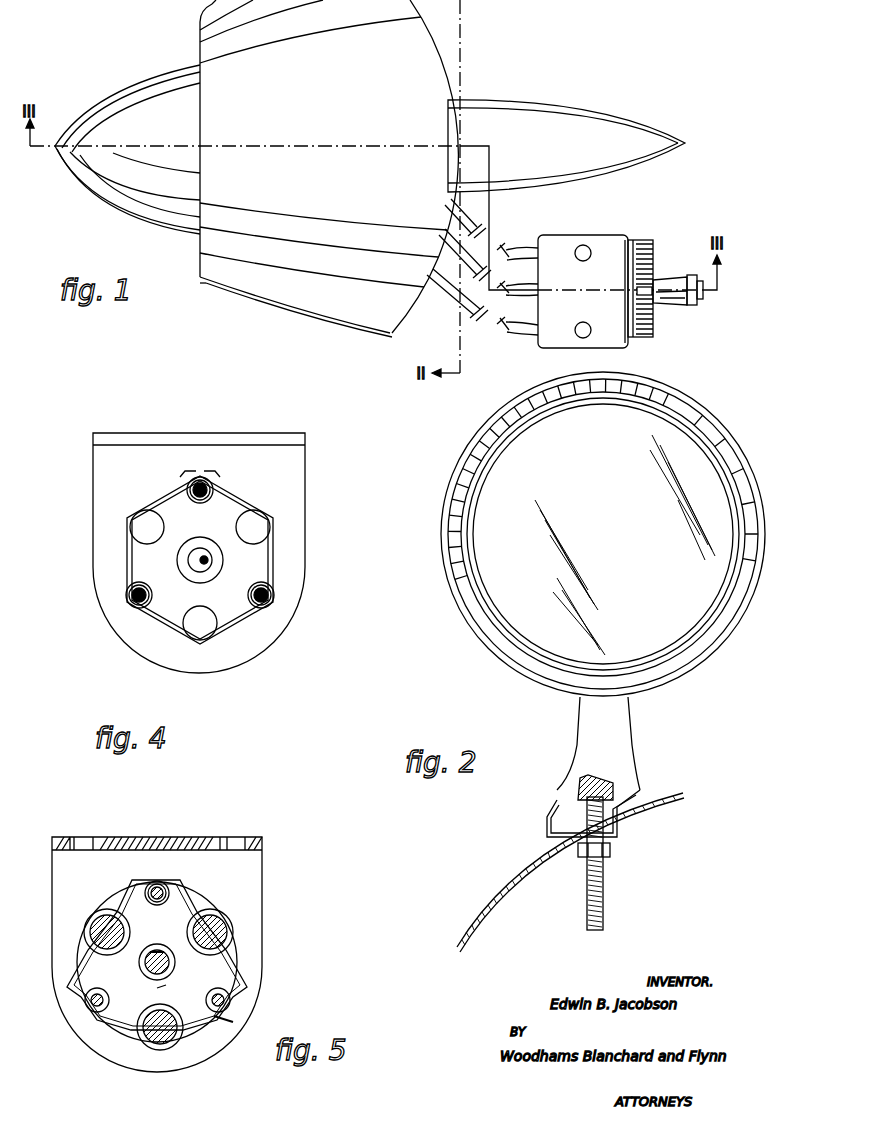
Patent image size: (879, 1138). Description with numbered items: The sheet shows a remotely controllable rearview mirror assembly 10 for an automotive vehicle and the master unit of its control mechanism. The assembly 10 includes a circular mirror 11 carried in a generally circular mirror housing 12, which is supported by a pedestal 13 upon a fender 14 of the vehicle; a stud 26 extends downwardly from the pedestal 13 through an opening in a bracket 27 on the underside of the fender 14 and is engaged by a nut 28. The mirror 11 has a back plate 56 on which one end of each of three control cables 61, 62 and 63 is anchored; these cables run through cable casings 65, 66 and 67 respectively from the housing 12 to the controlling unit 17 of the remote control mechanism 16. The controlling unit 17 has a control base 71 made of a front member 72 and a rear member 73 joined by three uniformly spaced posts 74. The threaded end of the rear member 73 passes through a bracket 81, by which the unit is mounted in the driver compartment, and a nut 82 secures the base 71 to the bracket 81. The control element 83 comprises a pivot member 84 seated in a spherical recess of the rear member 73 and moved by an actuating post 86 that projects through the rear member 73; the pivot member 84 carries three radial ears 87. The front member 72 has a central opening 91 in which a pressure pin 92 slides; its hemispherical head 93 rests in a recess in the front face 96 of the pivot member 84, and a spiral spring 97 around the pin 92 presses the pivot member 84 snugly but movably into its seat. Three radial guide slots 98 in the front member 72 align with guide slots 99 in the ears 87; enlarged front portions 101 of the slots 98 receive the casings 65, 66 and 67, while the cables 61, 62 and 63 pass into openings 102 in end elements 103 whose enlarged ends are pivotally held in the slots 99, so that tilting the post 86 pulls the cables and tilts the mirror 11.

In FIG. 1, the rearview mirror assembly 10 is at (530, 67).
In FIG. 2, the rearview mirror assembly 10 is at (576, 536).
In FIG. 2, the mirror 11 is at (688, 623).
In FIG. 2, the mirror housing 12 is at (452, 481).
In FIG. 1, the pedestal 13 is at (560, 100).
In FIG. 2, the pedestal 13 is at (625, 757).
In FIG. 2, the fender 14 is at (495, 886).
In FIG. 1, the remote control mechanism 16 is at (507, 305).
In FIG. 1, the controlling unit 17 is at (642, 268).
In FIG. 4, the controlling unit 17 is at (205, 538).
In FIG. 2, the stud 26 is at (604, 877).
In FIG. 2, the bracket 27 is at (572, 843).
In FIG. 2, the nut 28 is at (611, 850).
In FIG. 2, the back plate 56 is at (451, 572).
In FIG. 1, the control cable 61 is at (498, 331).
In FIG. 4, the control cable 61 is at (267, 603).
In FIG. 5, the control cable 61 is at (231, 1003).
In FIG. 1, the control cable 62 is at (504, 247).
In FIG. 4, the control cable 62 is at (138, 605).
In FIG. 5, the control cable 62 is at (88, 1002).
In FIG. 1, the control cable 63 is at (504, 290).
In FIG. 4, the control cable 63 is at (213, 485).
In FIG. 5, the control cable 63 is at (167, 895).
In FIG. 1, the cable casing 65 is at (442, 289).
In FIG. 4, the cable casing 65 is at (274, 592).
In FIG. 1, the cable casing 66 is at (446, 221).
In FIG. 4, the cable casing 66 is at (136, 590).
In FIG. 1, the cable casing 67 is at (436, 247).
In FIG. 4, the cable casing 67 is at (199, 478).
In FIG. 4, the control base 71 is at (270, 497).
In FIG. 5, the control base 71 is at (227, 905).
In FIG. 4, the front member 72 is at (283, 541).
In FIG. 5, the rear member 73 is at (236, 944).
In FIG. 5, the posts 74 is at (89, 924).
In FIG. 1, the bracket 81 is at (595, 243).
In FIG. 4, the bracket 81 is at (273, 441).
In FIG. 5, the bracket 81 is at (193, 837).
In FIG. 1, the nut 82 is at (643, 247).
In FIG. 1, the control element 83 is at (675, 313).
In FIG. 5, the pivot member 84 is at (223, 962).
In FIG. 1, the actuating post 86 is at (703, 298).
In FIG. 5, the ears 87 is at (214, 1021).
In FIG. 4, the central opening 91 is at (207, 560).
In FIG. 4, the pressure pin 92 is at (206, 567).
In FIG. 5, the pressure pin 92 is at (147, 952).
In FIG. 5, the head 93 is at (177, 977).
In FIG. 5, the front face 96 is at (122, 1002).
In FIG. 5, the spiral spring 97 is at (173, 962).
In FIG. 4, the guide slots 98 is at (133, 602).
In FIG. 5, the guide slots 99 is at (92, 1010).
In FIG. 4, the front portions 101 is at (210, 497).
In FIG. 5, the openings 102 is at (145, 891).
In FIG. 5, the end elements 103 is at (154, 883).